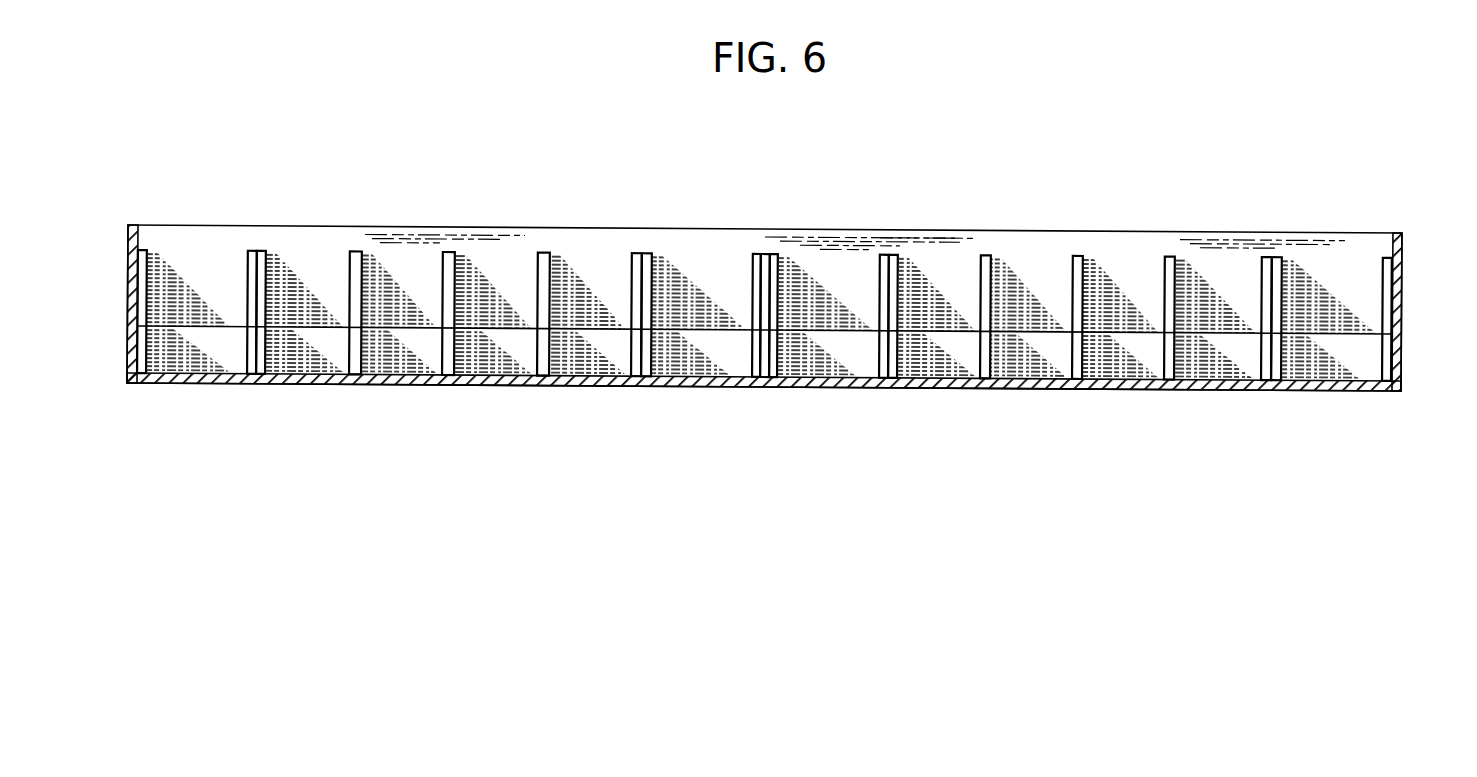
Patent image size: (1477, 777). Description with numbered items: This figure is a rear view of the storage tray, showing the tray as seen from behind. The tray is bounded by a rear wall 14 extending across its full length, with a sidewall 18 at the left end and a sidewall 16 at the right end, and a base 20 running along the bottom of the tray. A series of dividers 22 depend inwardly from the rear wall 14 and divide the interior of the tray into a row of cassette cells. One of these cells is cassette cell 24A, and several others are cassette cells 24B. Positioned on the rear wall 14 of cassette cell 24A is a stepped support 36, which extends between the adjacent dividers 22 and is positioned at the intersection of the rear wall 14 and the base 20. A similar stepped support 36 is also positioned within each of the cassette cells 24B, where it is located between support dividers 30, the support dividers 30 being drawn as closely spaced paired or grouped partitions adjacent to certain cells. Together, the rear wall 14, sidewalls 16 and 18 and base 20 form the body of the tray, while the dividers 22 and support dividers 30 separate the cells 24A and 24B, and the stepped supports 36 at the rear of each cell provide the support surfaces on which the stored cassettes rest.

The rear wall 14 is at (1382, 250).
The sidewall 16 is at (1401, 316).
The sidewall 18 is at (128, 294).
The base 20 is at (845, 384).
The divider 22 is at (545, 253).
The cassette cell 24A is at (307, 268).
The cassette cell 24B is at (195, 267).
The support divider 30 is at (648, 368).
The stepped support 36 is at (197, 361).